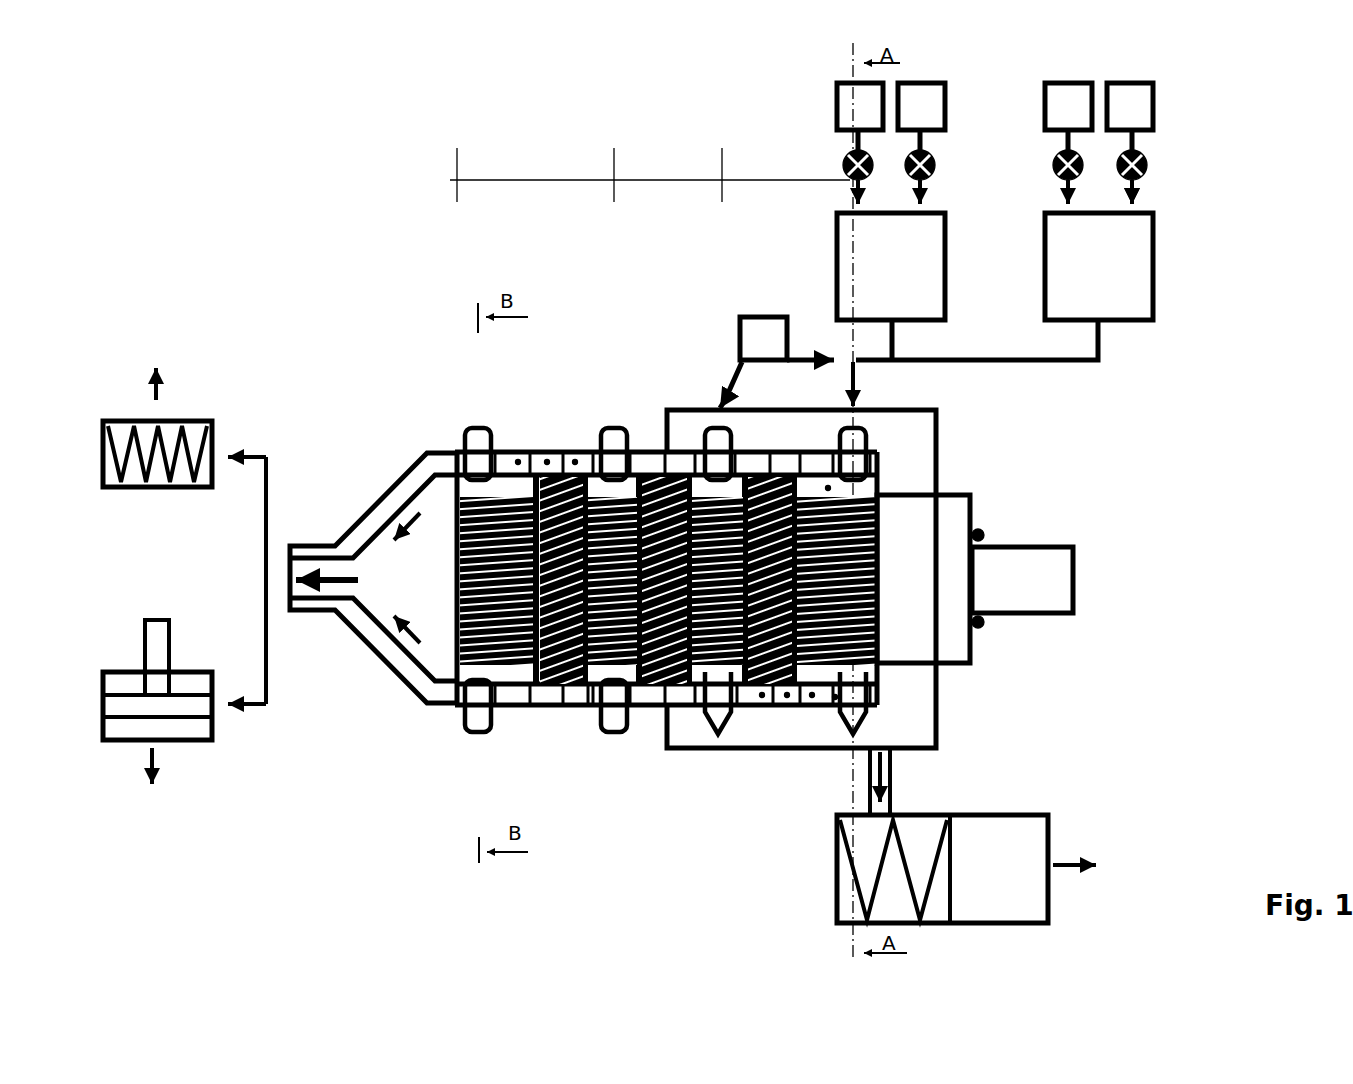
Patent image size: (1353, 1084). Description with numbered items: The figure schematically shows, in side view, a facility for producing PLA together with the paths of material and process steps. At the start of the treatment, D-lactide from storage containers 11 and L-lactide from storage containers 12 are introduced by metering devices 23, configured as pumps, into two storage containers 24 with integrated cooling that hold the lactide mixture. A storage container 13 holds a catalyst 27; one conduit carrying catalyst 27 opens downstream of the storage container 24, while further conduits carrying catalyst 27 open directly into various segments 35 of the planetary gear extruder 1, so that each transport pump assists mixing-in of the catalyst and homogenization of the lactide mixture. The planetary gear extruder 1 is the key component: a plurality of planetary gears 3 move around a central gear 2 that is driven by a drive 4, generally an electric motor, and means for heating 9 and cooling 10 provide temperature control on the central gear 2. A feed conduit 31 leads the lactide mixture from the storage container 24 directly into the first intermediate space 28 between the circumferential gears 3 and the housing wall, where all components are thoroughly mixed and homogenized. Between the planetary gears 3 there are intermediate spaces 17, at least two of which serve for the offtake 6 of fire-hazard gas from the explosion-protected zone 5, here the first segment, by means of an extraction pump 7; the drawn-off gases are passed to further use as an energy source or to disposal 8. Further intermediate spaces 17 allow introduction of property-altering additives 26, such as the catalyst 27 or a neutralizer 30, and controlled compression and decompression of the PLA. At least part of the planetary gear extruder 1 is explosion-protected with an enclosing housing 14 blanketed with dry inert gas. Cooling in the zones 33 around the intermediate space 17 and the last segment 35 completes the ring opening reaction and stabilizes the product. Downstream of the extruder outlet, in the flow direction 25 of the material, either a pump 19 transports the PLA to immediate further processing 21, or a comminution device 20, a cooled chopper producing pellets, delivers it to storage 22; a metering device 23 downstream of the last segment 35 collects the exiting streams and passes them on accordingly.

The planetary gear extruder 1 is at (423, 708).
The central gear 2 is at (878, 637).
The planetary gears 3 is at (657, 453).
The drive of the central gear 4 is at (1056, 585).
The explosion-protected zone 5 is at (685, 425).
The gas offtake 6 is at (715, 734).
The extraction pump 7 is at (1015, 840).
The further processing or disposal of the gas 8 is at (1097, 867).
The heating of the central gear 9 is at (1035, 585).
The cooling of the central gear 10 is at (978, 533).
The storage container for D-lactide 11 is at (848, 103).
The storage container for L-lactide 12 is at (922, 107).
The storage container for catalyst 13 is at (758, 333).
The enclosing housing 14 is at (835, 700).
The intermediate space 17 is at (588, 708).
The pump 19 is at (120, 475).
The comminution device 20 is at (113, 678).
The further processing 21 is at (155, 362).
The storage 22 is at (151, 795).
The metering device 23 is at (1118, 172).
The storage container containing lactide mixture 24 is at (1055, 297).
The flow direction of material 25 is at (393, 523).
The additives 26 is at (480, 418).
The catalyst 27 is at (737, 380).
The first intermediate space 28 is at (828, 488).
The neutralizer 30 is at (479, 744).
The feed conduit for lactide mixture 31 is at (866, 405).
The zones in longitudinal direction 33 is at (593, 455).
The segment 35 is at (650, 175).